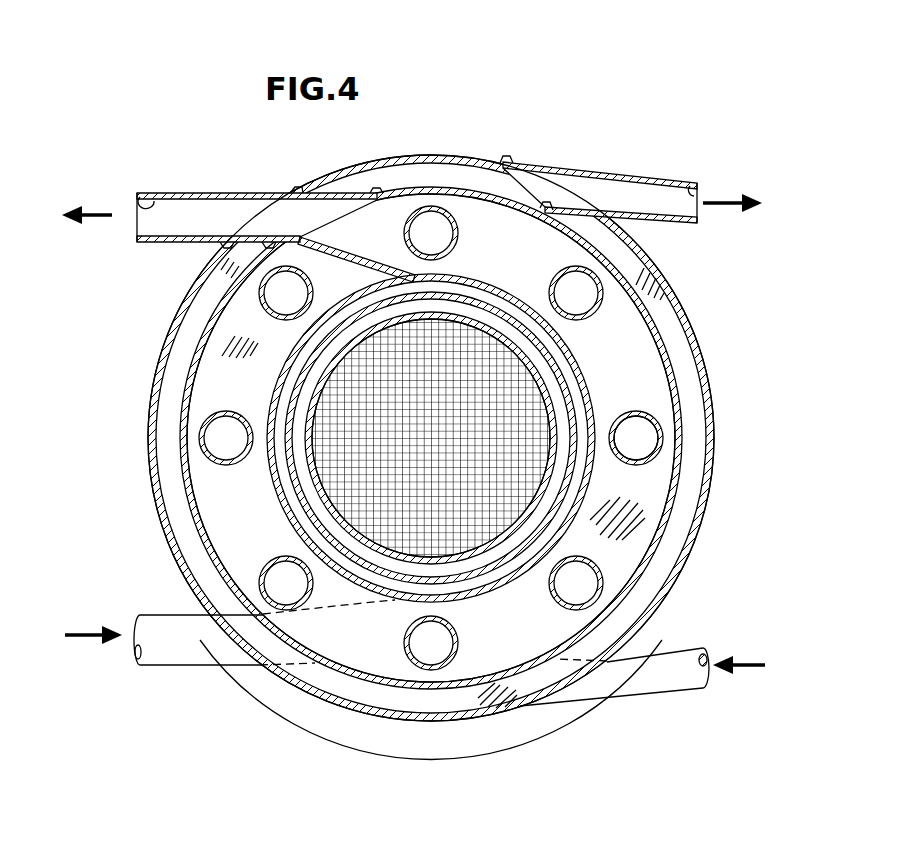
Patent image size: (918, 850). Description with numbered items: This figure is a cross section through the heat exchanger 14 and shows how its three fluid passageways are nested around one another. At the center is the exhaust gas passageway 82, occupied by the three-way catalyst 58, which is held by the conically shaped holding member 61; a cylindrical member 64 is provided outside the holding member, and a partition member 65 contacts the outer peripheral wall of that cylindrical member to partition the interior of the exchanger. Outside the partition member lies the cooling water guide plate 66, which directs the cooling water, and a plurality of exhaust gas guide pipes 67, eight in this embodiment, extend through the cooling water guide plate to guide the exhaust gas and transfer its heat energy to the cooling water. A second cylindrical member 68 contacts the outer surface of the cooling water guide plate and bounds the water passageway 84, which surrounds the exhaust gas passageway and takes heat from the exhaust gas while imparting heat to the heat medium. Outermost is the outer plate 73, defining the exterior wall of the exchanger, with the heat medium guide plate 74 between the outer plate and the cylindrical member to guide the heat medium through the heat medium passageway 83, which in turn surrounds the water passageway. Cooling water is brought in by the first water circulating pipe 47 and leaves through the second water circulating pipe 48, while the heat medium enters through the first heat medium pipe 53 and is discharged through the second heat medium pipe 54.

The heat exchanger 14 is at (527, 68).
The first water circulating pipe 47 is at (135, 655).
The second water circulating pipe 48 is at (143, 200).
The first heat medium pipe 53 is at (705, 655).
The second heat medium pipe 54 is at (690, 183).
The three-way catalyst 58 is at (333, 412).
The holding member 61 is at (548, 520).
The cylindrical member 64 is at (572, 482).
The partition member 65 is at (592, 400).
The cooling water guide plate 66 is at (222, 343).
The exhaust gas guide pipes 67 is at (643, 438).
The cylindrical member 68 is at (665, 346).
The outer plate 73 is at (663, 278).
The heat medium guide plate 74 is at (233, 270).
The exhaust gas passageway 82 is at (577, 583).
The heat medium passageway 83 is at (343, 690).
The water passageway 84 is at (222, 498).